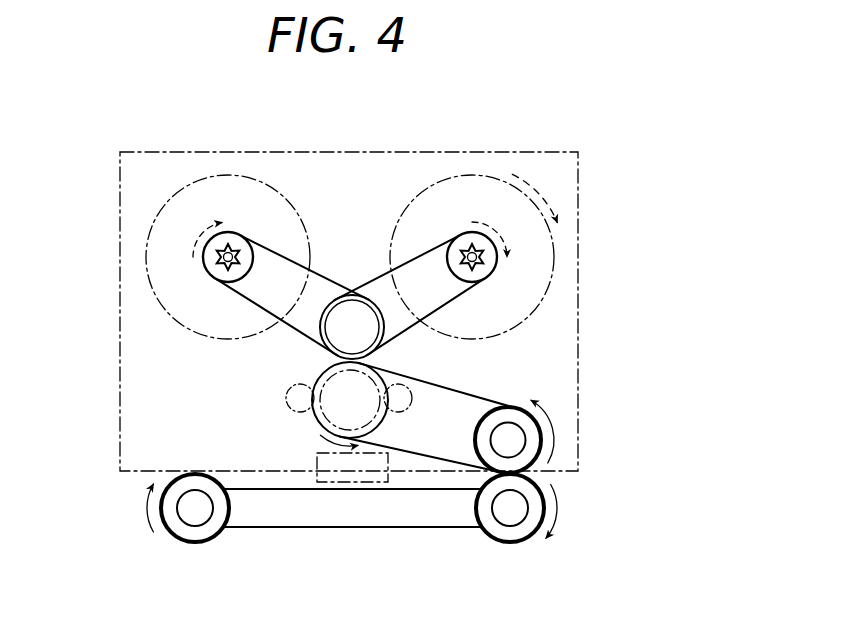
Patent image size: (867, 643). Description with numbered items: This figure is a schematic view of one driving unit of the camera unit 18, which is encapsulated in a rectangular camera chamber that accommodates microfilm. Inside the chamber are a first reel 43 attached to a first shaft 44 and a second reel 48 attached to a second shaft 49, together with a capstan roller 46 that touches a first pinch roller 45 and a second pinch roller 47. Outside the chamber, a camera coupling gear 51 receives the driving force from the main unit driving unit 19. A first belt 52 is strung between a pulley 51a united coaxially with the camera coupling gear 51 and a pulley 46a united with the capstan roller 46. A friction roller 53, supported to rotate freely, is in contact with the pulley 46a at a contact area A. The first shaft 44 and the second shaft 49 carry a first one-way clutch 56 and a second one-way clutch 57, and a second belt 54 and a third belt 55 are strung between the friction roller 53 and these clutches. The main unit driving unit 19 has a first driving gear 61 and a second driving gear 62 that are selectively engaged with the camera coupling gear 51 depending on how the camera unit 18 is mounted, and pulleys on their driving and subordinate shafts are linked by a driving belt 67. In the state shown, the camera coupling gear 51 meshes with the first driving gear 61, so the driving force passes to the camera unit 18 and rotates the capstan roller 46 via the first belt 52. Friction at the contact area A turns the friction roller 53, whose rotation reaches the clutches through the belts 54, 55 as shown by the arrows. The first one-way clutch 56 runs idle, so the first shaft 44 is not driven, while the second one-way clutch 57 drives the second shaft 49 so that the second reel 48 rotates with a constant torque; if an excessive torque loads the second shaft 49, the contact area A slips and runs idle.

The camera unit 18 is at (468, 142).
The main unit driving unit 19 is at (345, 541).
The first reel 43 is at (176, 215).
The first shaft 44 is at (228, 257).
The first pinch roller 45 is at (298, 406).
The capstan roller 46 is at (308, 383).
The pulley 46a is at (384, 372).
The second pinch roller 47 is at (406, 406).
The second reel 48 is at (532, 263).
The second shaft 49 is at (496, 273).
The camera coupling gear 51 is at (528, 413).
The pulley 51a is at (528, 458).
The first belt 52 is at (462, 402).
The friction roller 53 is at (362, 312).
The second belt 54 is at (319, 277).
The third belt 55 is at (417, 258).
The first one-way clutch 56 is at (246, 229).
The second one-way clutch 57 is at (446, 228).
The first driving gear 61 is at (533, 540).
The second driving gear 62 is at (170, 541).
The driving belt 67 is at (408, 530).
The contact area A is at (330, 354).